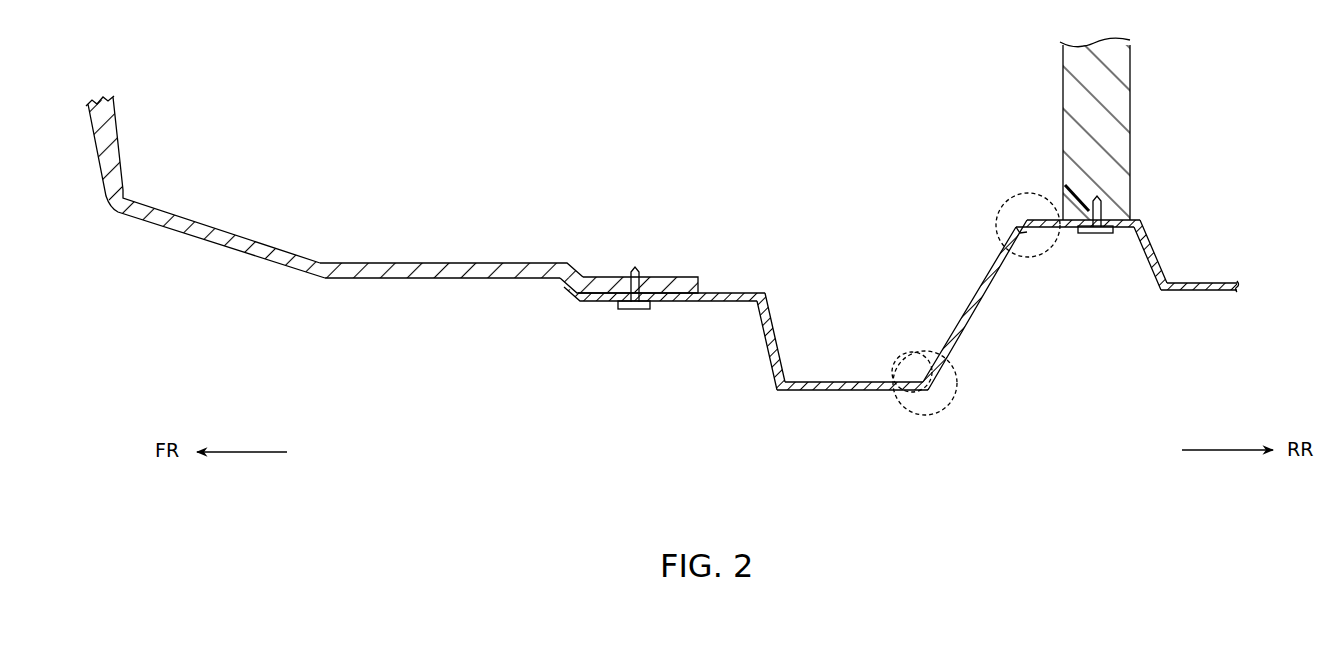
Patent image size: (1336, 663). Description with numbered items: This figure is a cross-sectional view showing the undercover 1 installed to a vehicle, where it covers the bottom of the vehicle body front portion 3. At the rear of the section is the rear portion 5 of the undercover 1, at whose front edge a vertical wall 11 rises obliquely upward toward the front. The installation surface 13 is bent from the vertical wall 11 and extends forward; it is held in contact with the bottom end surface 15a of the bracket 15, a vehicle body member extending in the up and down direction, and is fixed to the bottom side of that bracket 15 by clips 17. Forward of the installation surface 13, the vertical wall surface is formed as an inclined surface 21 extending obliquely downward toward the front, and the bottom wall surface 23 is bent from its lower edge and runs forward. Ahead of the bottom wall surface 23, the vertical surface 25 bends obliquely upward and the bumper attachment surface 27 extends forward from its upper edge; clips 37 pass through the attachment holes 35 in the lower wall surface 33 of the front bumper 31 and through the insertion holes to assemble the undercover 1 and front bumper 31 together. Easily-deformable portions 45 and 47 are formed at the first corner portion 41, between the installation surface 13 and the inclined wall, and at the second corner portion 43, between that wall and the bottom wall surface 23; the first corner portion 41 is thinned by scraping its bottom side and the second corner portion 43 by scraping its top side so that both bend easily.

The undercover 1 is at (803, 391).
The vehicle body front portion 3 is at (586, 199).
The rear portion 5 is at (1208, 282).
The vertical wall 11 is at (1155, 255).
The installation surface 13 is at (1065, 230).
The bracket 15 is at (1131, 99).
The bottom end surface 15a is at (1113, 234).
The clips 17 is at (1063, 185).
The inclined surface 21 is at (956, 345).
The bottom wall surface 23 is at (836, 393).
The vertical surface 25 is at (766, 349).
The bumper attachment surface 27 is at (736, 292).
The front bumper 31 is at (199, 220).
The lower wall surface 33 is at (437, 262).
The attachment holes 35 is at (618, 277).
The clips 37 is at (633, 310).
The first corner portion 41 is at (1001, 206).
The second corner portion 43 is at (942, 414).
The easily-deformable portion 45 is at (1027, 240).
The easily-deformable portion 47 is at (915, 358).